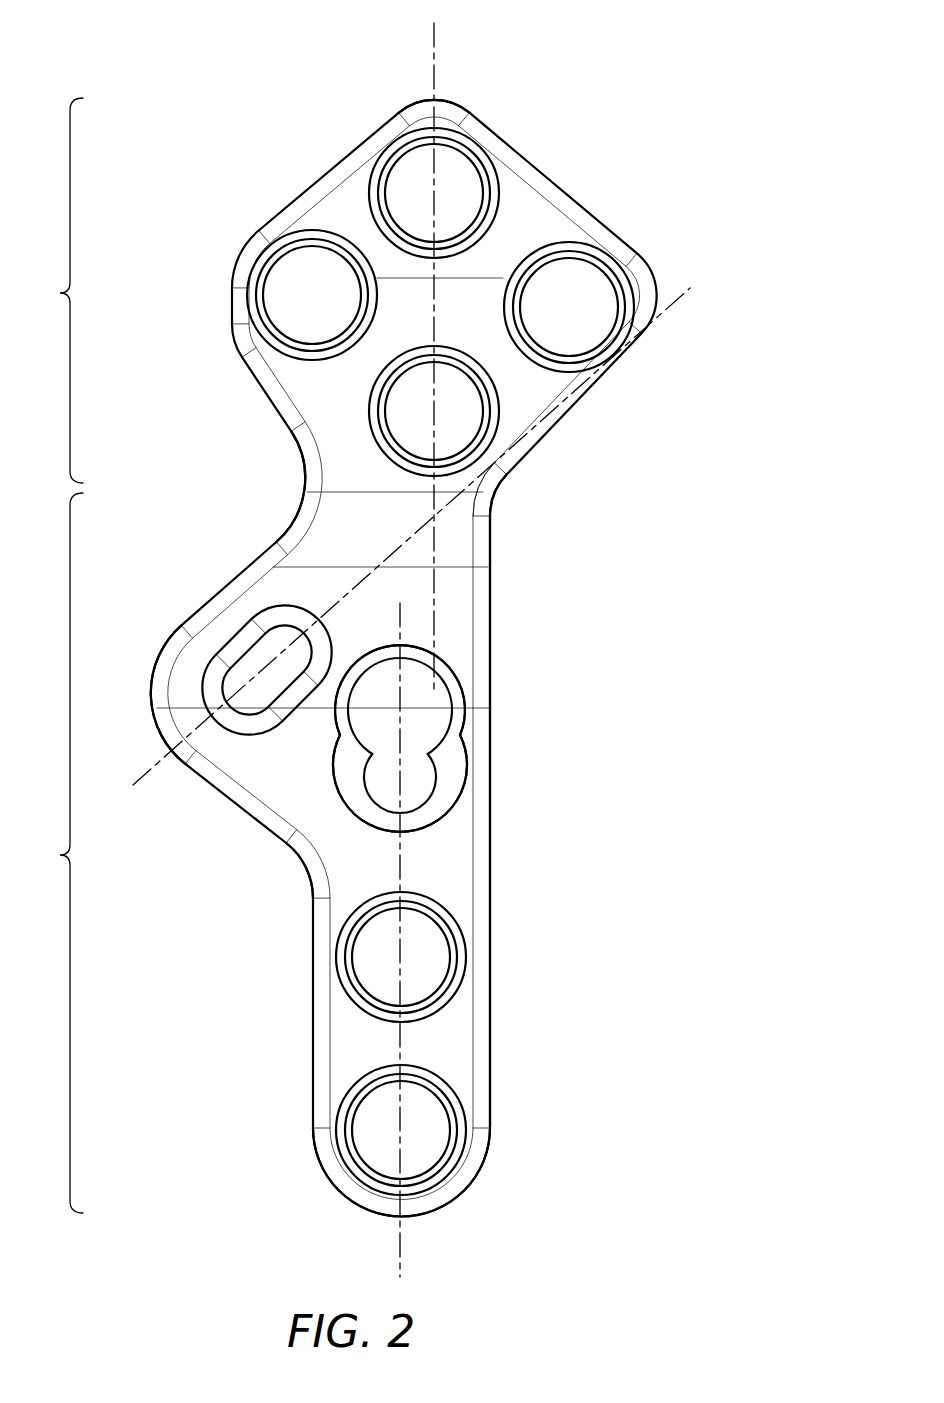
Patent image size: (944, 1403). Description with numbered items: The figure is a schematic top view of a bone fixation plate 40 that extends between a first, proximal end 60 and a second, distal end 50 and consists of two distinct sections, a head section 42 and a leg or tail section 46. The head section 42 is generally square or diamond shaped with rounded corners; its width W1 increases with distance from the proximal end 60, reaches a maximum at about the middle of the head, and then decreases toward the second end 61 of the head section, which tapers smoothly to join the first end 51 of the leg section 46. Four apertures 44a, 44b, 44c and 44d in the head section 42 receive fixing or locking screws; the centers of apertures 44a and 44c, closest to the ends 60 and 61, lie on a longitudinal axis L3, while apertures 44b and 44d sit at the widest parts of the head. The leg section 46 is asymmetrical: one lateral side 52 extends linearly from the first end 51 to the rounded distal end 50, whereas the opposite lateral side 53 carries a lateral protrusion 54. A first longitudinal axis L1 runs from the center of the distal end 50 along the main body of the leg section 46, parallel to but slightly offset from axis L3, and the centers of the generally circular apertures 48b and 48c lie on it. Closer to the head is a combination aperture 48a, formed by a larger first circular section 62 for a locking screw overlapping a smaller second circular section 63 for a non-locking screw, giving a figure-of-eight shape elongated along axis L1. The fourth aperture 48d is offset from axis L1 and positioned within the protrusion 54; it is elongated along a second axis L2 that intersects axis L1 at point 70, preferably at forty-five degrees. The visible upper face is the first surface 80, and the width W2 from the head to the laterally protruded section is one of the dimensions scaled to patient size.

The fixation plate 40 is at (540, 215).
The head section 42 is at (54, 290).
The leg section 46 is at (54, 853).
The aperture 44a is at (455, 172).
The aperture 44b is at (582, 321).
The aperture 44c is at (462, 412).
The aperture 44d is at (292, 297).
The combination aperture 48a is at (432, 680).
The aperture 48b is at (436, 958).
The aperture 48c is at (436, 1108).
The fourth aperture 48d is at (247, 653).
The distal end 50 is at (438, 1200).
The first end of the leg section 51 is at (323, 530).
The lateral side 52 is at (490, 598).
The lateral side 53 is at (350, 883).
The lateral protrusion 54 is at (153, 689).
The proximal end 60 is at (406, 107).
The second end of the head section 61 is at (503, 492).
The first circular section 62 is at (462, 680).
The second circular section 63 is at (456, 767).
The intersection point 70 is at (480, 529).
The first surface 80 is at (523, 162).
The first longitudinal axis L1 is at (400, 1264).
The second axis L2 is at (150, 770).
The further longitudinal axis L3 is at (434, 31).
The width of head W1 is at (470, 279).
The width of head to laterally protruded section W2 is at (492, 709).